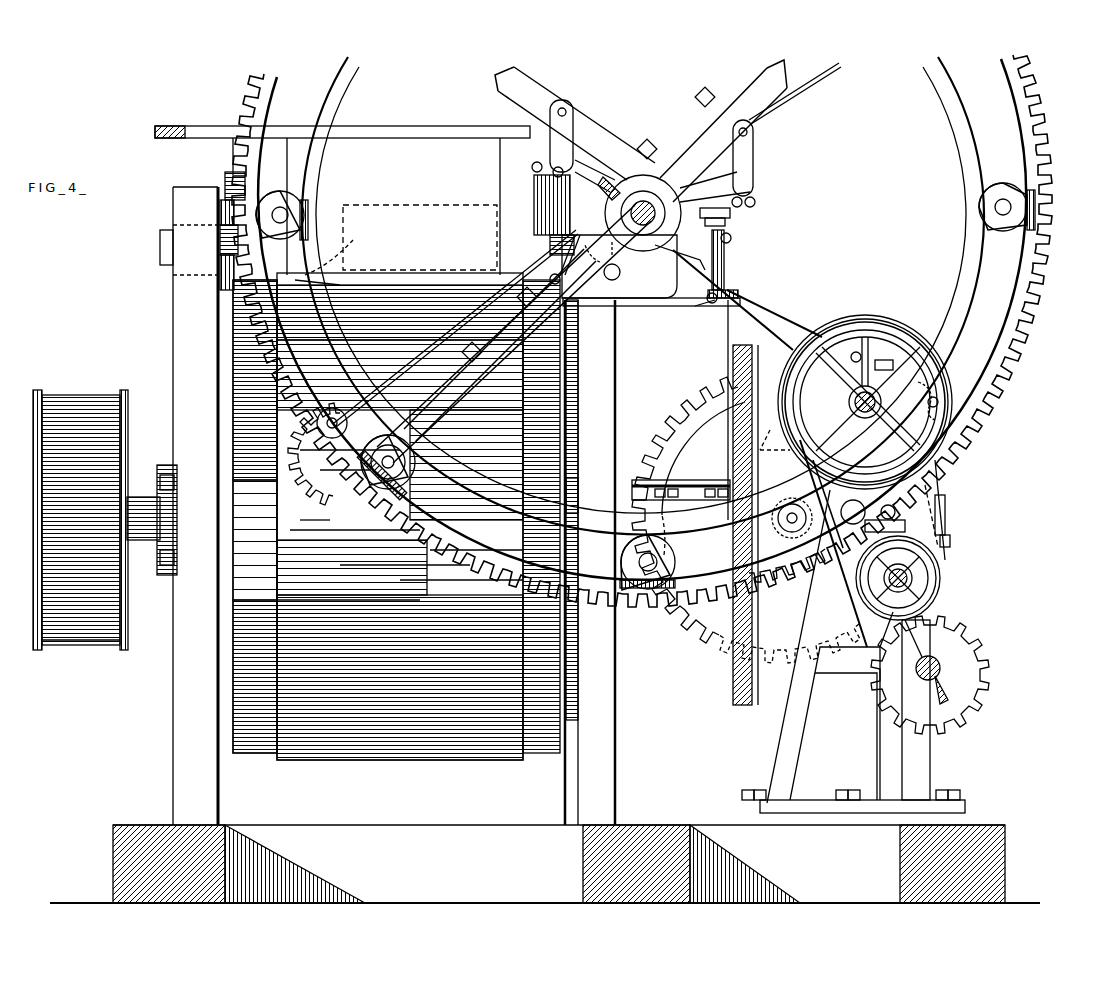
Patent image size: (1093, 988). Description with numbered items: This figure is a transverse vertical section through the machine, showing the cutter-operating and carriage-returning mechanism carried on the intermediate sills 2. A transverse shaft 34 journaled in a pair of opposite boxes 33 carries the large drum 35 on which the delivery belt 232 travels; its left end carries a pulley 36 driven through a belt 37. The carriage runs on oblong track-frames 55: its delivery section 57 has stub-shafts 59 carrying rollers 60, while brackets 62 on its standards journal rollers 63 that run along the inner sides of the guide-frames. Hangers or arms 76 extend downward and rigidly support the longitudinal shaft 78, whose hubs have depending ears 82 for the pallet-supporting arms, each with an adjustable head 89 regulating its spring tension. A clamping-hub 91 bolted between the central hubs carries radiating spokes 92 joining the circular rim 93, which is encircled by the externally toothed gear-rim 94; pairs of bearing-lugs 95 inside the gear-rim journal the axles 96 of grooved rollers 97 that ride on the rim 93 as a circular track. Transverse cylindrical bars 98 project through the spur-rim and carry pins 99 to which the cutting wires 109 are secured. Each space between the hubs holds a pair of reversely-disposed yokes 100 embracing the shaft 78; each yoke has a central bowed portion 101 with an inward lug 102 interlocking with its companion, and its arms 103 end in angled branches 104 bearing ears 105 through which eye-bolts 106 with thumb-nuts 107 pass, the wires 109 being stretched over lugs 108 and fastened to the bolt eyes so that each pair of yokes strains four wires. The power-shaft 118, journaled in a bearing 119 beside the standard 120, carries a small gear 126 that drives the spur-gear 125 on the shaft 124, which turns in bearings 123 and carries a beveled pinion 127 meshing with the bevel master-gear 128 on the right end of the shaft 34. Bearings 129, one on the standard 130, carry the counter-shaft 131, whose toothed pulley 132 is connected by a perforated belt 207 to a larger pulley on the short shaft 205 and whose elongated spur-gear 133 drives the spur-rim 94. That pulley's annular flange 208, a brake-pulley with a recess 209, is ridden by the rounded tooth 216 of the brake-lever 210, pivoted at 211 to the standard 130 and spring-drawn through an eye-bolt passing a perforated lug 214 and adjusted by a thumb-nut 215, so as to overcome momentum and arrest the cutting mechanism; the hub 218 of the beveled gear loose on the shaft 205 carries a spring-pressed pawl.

The intermediate sills 2 is at (545, 848).
The opposite boxes 33 is at (157, 490).
The transverse shaft 34 is at (143, 540).
The large drum 35 is at (583, 660).
The pulley 36 is at (80, 643).
The belt 37 is at (72, 398).
The track-frames 55 is at (174, 210).
The delivery section 57 is at (306, 275).
The stub-shafts 59 is at (218, 252).
The rollers 60 is at (215, 282).
The brackets 62 is at (226, 176).
The rollers 63 is at (218, 203).
The hangers or arms 76 is at (648, 175).
The longitudinally-disposed shaft 78 is at (640, 200).
The depending ears 82 is at (619, 266).
The head 89 is at (730, 216).
The clamping-hub 91 is at (650, 180).
The spokes 92 is at (742, 92).
The circular rim 93 is at (337, 102).
The spur gear-rim 94 is at (273, 101).
The bearing-lugs 95 is at (365, 490).
The axle 96 is at (398, 478).
The grooved roller 97 is at (390, 435).
The transverse cylindrical bars 98 is at (335, 445).
The pins or keys 99 is at (320, 412).
The yokes 100 is at (752, 172).
The bowed portion 101 is at (658, 180).
The lug 102 is at (614, 254).
The arms 103 is at (580, 244).
The branches 104 is at (700, 306).
The ears 105 is at (731, 240).
The eye-bolts 106 is at (724, 260).
The thumb-nuts 107 is at (755, 202).
The lugs 108 is at (738, 290).
The wires 109 is at (535, 92).
The power-shaft 118 is at (940, 665).
The bearing 119 is at (945, 690).
The standard 120 is at (920, 748).
The bearings 123 is at (786, 522).
The shaft 124 is at (815, 555).
The spur-gear 125 is at (690, 412).
The smaller gear 126 is at (950, 638).
The beveled pinion 127 is at (774, 445).
The bevel master-gear 128 is at (733, 683).
The bearings 129 is at (940, 592).
The standard 130 is at (880, 763).
The counter-shaft 131 is at (912, 570).
The toothed pulley 132 is at (950, 540).
The elongated spur-gear 133 is at (905, 528).
The short longitudinal shaft 205 is at (850, 395).
The perforated belt 207 is at (945, 505).
The annular flange 208 is at (867, 340).
The recess 209 is at (940, 390).
The brake-pawl or lever 210 is at (940, 478).
The pivot 211 is at (896, 514).
The perforated lug 214 is at (858, 345).
The thumb-nut 215 is at (847, 354).
The rounded lug or tooth 216 is at (940, 401).
The hub 218 is at (887, 357).
The delivery belt 232 is at (348, 593).